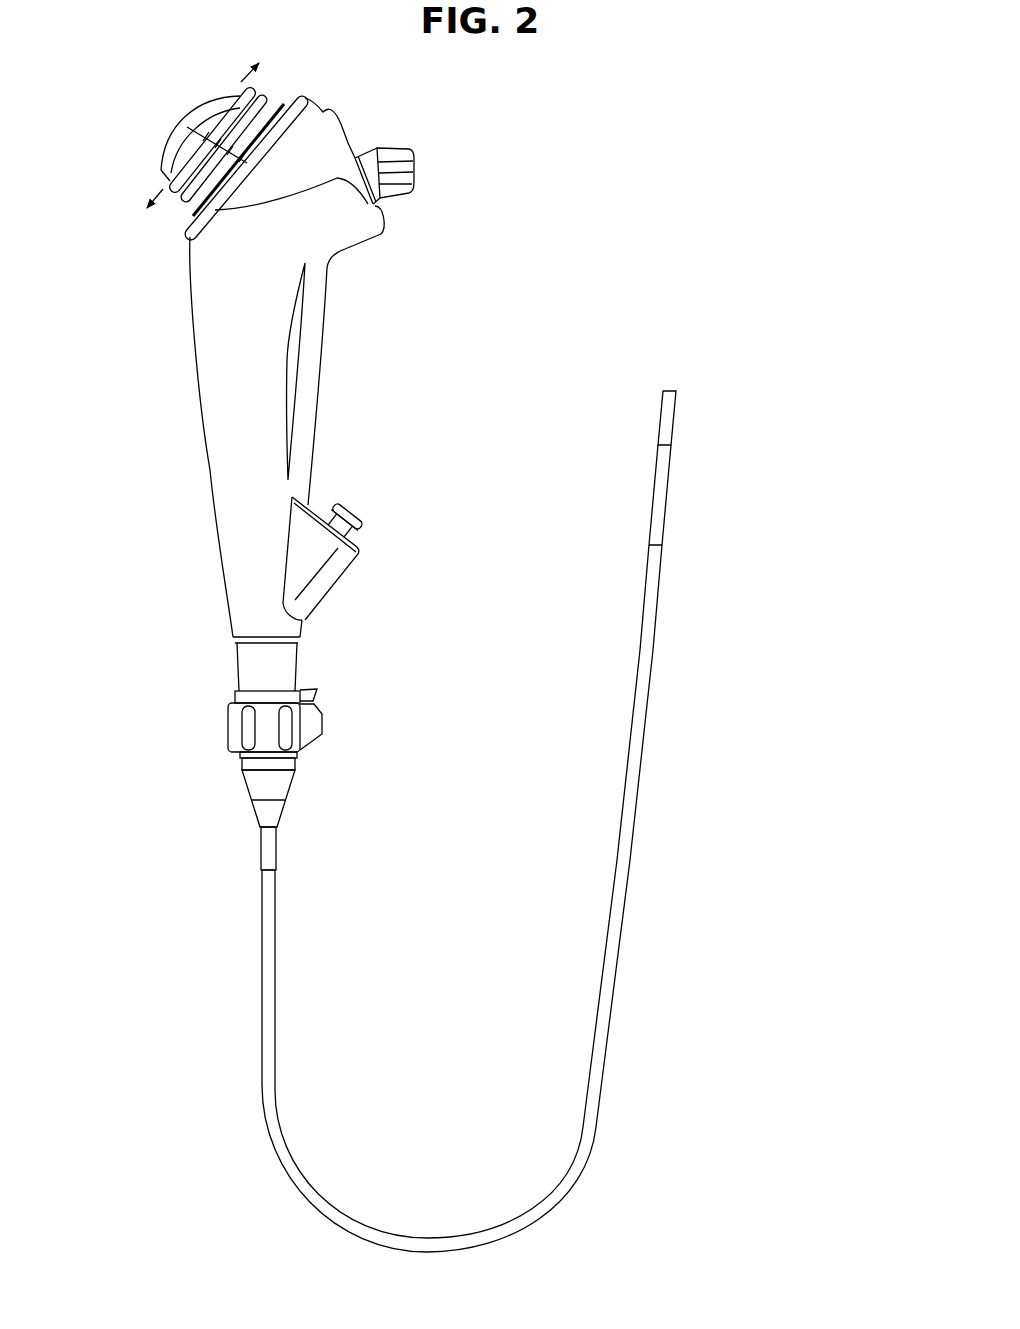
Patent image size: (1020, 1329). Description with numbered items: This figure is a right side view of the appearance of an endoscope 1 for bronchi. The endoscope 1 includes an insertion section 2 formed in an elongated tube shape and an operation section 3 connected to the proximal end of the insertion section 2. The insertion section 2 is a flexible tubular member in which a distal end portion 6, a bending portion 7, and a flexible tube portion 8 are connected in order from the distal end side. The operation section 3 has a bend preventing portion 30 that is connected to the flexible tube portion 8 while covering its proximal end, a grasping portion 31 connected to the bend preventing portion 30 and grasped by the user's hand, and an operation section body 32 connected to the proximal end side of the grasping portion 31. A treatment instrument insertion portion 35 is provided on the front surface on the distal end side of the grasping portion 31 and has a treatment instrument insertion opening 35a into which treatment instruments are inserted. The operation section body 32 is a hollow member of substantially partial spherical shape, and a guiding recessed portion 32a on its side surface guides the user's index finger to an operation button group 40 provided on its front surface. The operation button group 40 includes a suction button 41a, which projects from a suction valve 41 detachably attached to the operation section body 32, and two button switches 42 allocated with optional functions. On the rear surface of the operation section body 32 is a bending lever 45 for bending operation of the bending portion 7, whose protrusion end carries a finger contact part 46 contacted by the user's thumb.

The endoscope 1 is at (664, 207).
The insertion section 2 is at (582, 398).
The operation section 3 is at (403, 350).
The distal end portion 6 is at (660, 413).
The bending portion 7 is at (655, 488).
The flexible tube portion 8 is at (645, 600).
The bend preventing portion 30 is at (282, 787).
The grasping portion 31 is at (350, 404).
The operation section body 32 is at (453, 201).
The guiding recessed portion 32a is at (305, 222).
The treatment instrument insertion portion 35 is at (347, 570).
The treatment instrument insertion opening 35a is at (354, 512).
The operation button group 40 is at (409, 136).
The suction valve 41 is at (355, 158).
The suction button 41a is at (414, 162).
The button switch 42 is at (384, 214).
The bending lever 45 is at (200, 139).
The finger contact part 46 is at (190, 122).